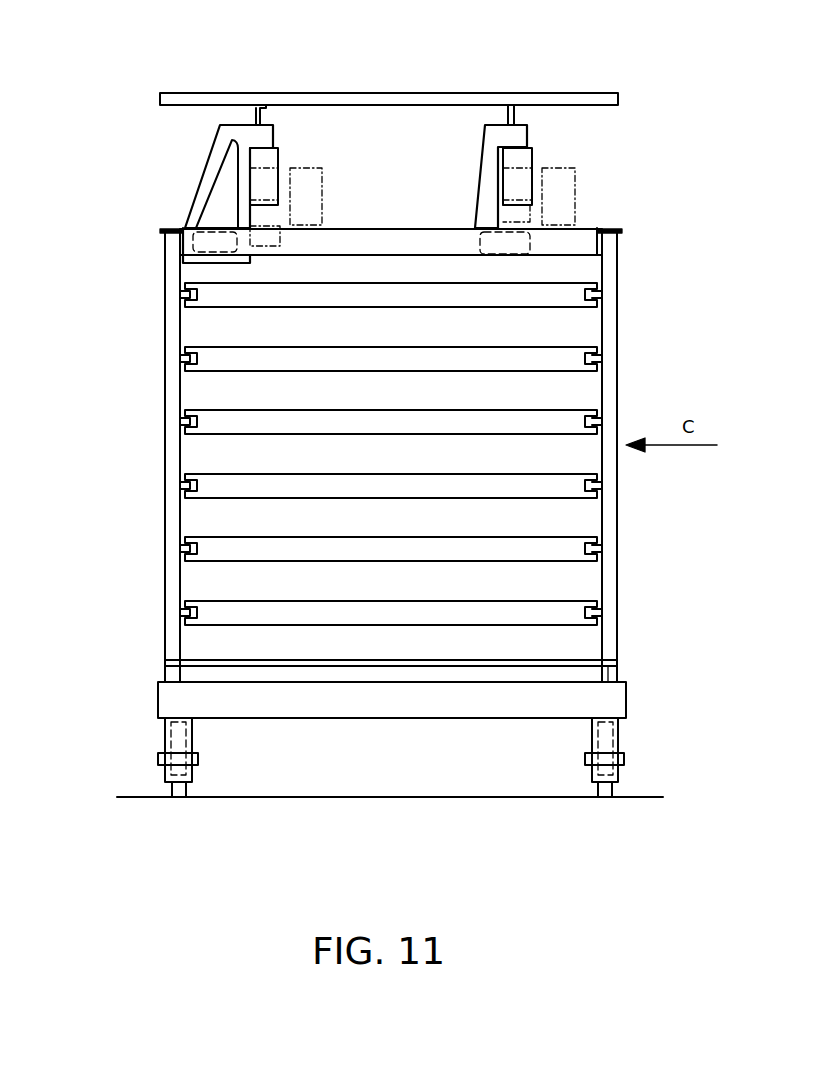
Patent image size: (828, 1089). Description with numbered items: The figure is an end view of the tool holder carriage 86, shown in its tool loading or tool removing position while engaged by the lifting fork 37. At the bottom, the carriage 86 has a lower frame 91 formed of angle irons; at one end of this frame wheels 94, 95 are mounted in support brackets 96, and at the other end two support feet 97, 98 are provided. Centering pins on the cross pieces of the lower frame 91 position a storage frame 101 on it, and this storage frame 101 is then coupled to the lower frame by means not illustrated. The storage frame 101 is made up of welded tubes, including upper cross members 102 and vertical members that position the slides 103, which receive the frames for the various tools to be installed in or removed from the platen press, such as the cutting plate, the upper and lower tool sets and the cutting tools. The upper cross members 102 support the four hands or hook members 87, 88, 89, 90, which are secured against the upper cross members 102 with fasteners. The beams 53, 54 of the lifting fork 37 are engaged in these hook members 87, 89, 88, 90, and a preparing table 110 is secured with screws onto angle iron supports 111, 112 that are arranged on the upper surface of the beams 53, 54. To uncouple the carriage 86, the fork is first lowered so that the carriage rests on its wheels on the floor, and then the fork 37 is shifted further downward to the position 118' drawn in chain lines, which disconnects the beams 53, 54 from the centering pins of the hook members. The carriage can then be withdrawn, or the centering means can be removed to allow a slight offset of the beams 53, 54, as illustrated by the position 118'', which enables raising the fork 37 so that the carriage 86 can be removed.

The lifting fork 37 is at (549, 158).
The beam 53 is at (532, 152).
The beam 54 is at (278, 155).
The tool holder carriage 86 is at (638, 272).
The hook member 87 is at (159, 136).
The hook member 89 is at (210, 185).
The hook member 88 is at (515, 132).
The hook member 90 is at (488, 152).
The lower frame 91 is at (626, 705).
The wheel 94 is at (178, 798).
The wheel 95 is at (603, 798).
The support bracket 96 is at (163, 730).
The support foot 97 is at (167, 787).
The support foot 98 is at (590, 787).
The storage frame 101 is at (617, 630).
The upper cross member 102 is at (268, 216).
The slide 103 is at (183, 294).
The preparing table 110 is at (190, 100).
The angle iron support 111 is at (257, 108).
The angle iron support 112 is at (518, 112).
The lowered fork position 118' is at (474, 128).
The offset beam position 118'' is at (338, 189).